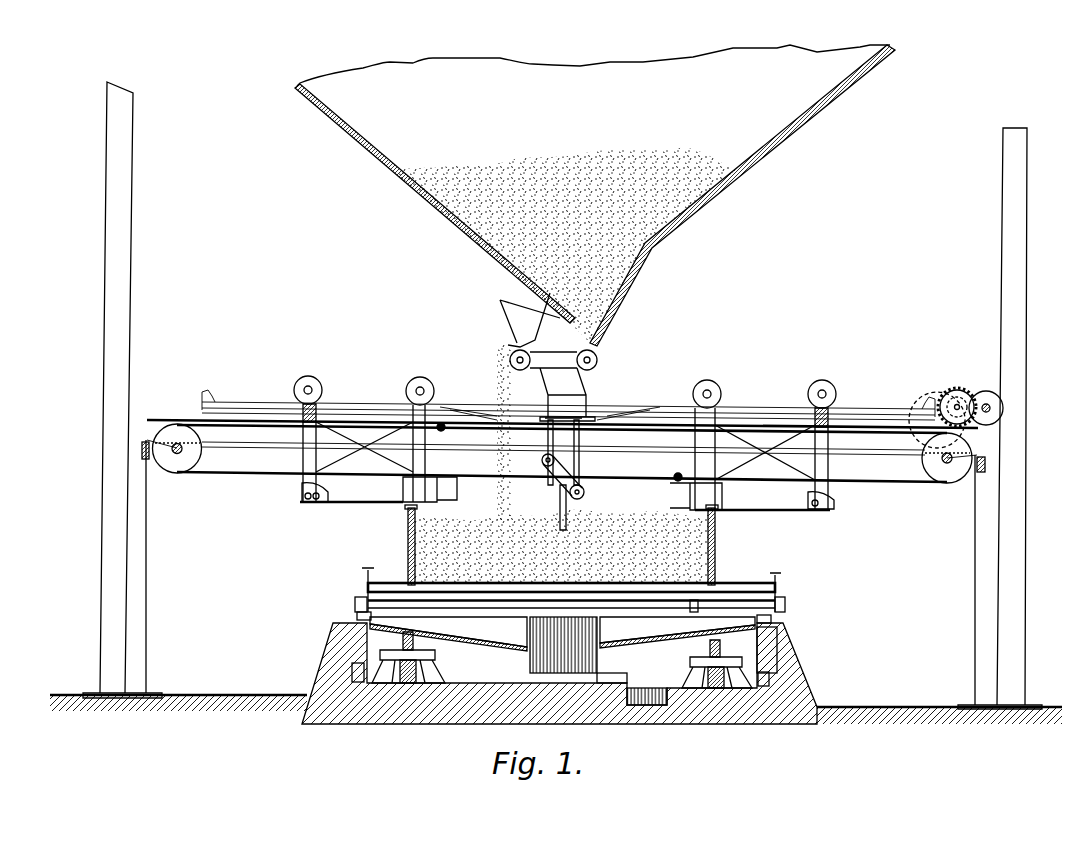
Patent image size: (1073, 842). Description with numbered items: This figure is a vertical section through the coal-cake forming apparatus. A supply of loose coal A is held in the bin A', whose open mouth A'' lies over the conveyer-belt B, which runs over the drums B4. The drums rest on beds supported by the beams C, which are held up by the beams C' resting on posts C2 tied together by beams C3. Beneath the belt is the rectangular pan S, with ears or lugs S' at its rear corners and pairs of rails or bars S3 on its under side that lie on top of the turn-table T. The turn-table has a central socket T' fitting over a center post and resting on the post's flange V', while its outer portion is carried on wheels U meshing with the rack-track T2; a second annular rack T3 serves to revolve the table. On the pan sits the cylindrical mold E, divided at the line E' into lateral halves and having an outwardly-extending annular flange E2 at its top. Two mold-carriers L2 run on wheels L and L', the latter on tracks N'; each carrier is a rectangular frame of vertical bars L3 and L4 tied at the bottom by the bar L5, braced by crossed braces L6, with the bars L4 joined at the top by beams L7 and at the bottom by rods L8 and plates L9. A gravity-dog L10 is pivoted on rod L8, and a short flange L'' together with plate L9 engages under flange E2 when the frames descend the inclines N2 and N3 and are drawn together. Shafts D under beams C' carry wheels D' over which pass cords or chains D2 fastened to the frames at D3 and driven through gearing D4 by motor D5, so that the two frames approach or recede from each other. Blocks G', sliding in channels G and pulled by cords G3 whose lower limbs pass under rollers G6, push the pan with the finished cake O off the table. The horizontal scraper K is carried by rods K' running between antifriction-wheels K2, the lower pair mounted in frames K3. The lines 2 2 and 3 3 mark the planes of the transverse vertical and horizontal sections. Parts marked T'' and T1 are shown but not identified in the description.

The section line 2 2 is at (563, 727).
The section line 3 3 is at (1045, 352).
The supply of loose coal A is at (564, 245).
The bin A' is at (595, 195).
The open mouth A'' is at (534, 319).
The conveyer-belt B is at (518, 347).
The drums B4 is at (535, 360).
The beams C is at (562, 433).
The beams C' is at (245, 458).
The posts C2 is at (147, 540).
The beams C3 is at (988, 463).
The shafts D is at (563, 474).
The wheels D' is at (584, 470).
The endless cords or chains D2 is at (214, 478).
The cord fastening D3 is at (676, 481).
The train of gearing D4 is at (952, 390).
The motor D5 is at (986, 388).
The cylindrical matrix or mold E is at (572, 545).
The dividing line E' is at (622, 522).
The annular flange E2 is at (718, 512).
The channels G is at (551, 616).
The blocks G' is at (556, 620).
The cords or chains G3 is at (762, 685).
The small rollers G6 is at (770, 674).
The horizontal scraper or leveling-plow K is at (546, 520).
The rods K' is at (573, 442).
The antifriction-wheels K2 is at (585, 492).
The frames K3 is at (580, 445).
The wheels L is at (567, 387).
The wheels L' is at (565, 393).
The short flange L'' is at (561, 517).
The mold-carriers L2 is at (830, 464).
The vertical bars L3 is at (690, 455).
The vertical bars L4 is at (828, 492).
The bar L5 is at (792, 511).
The crossed braces L6 is at (780, 478).
The beams L7 is at (832, 408).
The rods L8 is at (826, 504).
The plates L9 is at (828, 510).
The gravity-dog L10 is at (810, 492).
The tracks N' is at (568, 394).
The incline N2 is at (655, 405).
The incline N3 is at (752, 408).
The cake O is at (742, 578).
The rectangular pan S is at (571, 590).
The ears or lugs S' is at (560, 594).
The rails or bars S3 is at (645, 622).
The turn-table T is at (578, 650).
The central socket T' is at (448, 634).
The beam connection T'' is at (601, 597).
The footing T1 is at (647, 696).
The rack-track T2 is at (694, 618).
The second annular rack T3 is at (766, 650).
The wheels U is at (645, 658).
The flange V' is at (502, 666).